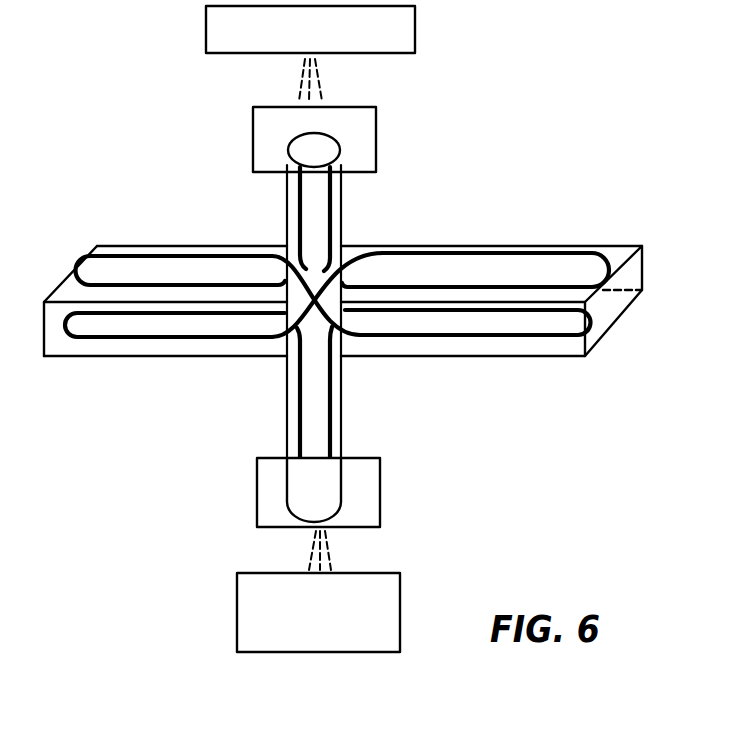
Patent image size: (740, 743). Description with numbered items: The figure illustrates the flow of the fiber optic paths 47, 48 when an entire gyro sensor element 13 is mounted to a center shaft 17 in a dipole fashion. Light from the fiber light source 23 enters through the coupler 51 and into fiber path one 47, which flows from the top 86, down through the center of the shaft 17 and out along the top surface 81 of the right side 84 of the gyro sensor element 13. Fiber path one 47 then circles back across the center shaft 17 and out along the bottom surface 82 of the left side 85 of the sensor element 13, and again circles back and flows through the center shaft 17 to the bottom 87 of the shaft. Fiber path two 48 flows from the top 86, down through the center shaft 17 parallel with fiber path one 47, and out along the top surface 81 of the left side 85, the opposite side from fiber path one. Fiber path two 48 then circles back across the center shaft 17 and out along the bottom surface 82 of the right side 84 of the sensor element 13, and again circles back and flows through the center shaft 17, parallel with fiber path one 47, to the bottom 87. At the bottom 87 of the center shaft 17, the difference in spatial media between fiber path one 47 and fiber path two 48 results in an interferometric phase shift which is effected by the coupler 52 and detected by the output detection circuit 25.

The fiber light source 23 is at (416, 32).
The coupler 51 is at (377, 118).
The top 86 is at (323, 147).
The center shaft 17 is at (340, 183).
The fiber path 2 48 is at (298, 205).
The fiber path 1 47 is at (331, 223).
The gyro sensor element 13 is at (377, 271).
The top surface 81 is at (609, 249).
The bottom surface 82 is at (597, 329).
The left side 85 is at (168, 325).
The right side 84 is at (485, 325).
The coupler 52 is at (380, 467).
The bottom 87 is at (335, 497).
The output detection circuit 25 is at (400, 600).